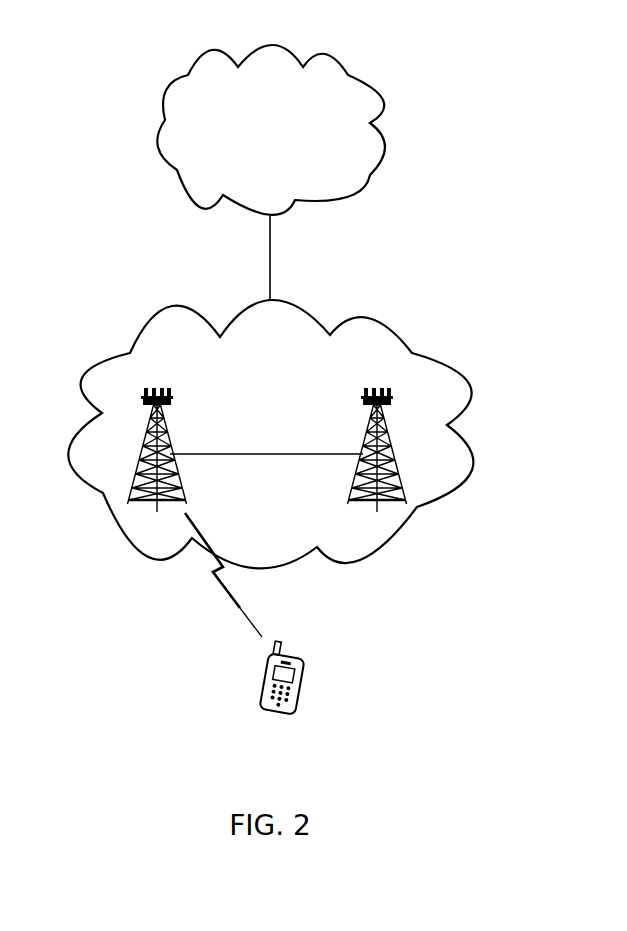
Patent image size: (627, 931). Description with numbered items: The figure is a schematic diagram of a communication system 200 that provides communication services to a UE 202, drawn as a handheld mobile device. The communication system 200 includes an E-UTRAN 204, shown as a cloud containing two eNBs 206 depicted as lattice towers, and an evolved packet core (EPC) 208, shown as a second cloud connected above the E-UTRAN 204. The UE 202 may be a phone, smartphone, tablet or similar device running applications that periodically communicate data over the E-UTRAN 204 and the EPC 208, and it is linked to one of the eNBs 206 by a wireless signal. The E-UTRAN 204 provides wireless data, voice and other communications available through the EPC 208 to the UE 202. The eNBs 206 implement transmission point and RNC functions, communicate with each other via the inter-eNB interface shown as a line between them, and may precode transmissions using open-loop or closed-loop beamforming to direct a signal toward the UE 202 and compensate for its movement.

The communication system 200 is at (58, 105).
The UE 202 is at (278, 713).
The E-UTRAN 204 is at (267, 381).
The eNBs 206 is at (155, 420).
The evolved packet core (EPC) 208 is at (256, 163).